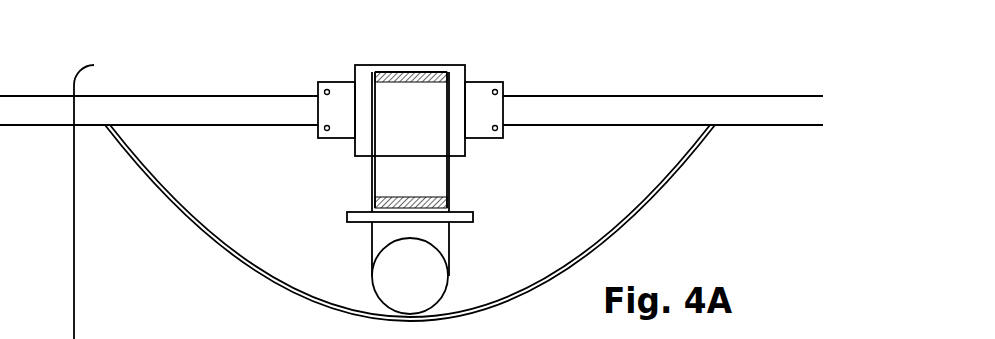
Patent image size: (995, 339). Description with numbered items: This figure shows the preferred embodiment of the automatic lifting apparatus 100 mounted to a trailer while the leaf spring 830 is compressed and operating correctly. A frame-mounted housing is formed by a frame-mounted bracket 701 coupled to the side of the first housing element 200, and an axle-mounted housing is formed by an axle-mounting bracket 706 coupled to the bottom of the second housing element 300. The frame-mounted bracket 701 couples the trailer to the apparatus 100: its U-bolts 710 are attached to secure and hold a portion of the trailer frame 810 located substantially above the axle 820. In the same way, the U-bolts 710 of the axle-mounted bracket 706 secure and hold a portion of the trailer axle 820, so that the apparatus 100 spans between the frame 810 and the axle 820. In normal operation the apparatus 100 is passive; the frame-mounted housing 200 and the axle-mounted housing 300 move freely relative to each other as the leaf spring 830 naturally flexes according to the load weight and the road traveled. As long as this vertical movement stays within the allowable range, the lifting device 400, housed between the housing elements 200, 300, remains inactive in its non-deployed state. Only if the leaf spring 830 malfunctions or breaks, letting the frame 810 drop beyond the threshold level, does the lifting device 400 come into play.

The automatic lifting apparatus 100 is at (74, 219).
The first housing element 200 is at (443, 64).
The second housing element 300 is at (450, 177).
The lifting device 400 is at (395, 162).
The frame-mounted bracket 701 is at (340, 93).
The axle-mounting bracket 706 is at (470, 218).
The U-bolts 710 is at (324, 128).
The trailer frame 810 is at (162, 112).
The axle 820 is at (410, 278).
The leaf spring 830 is at (643, 212).